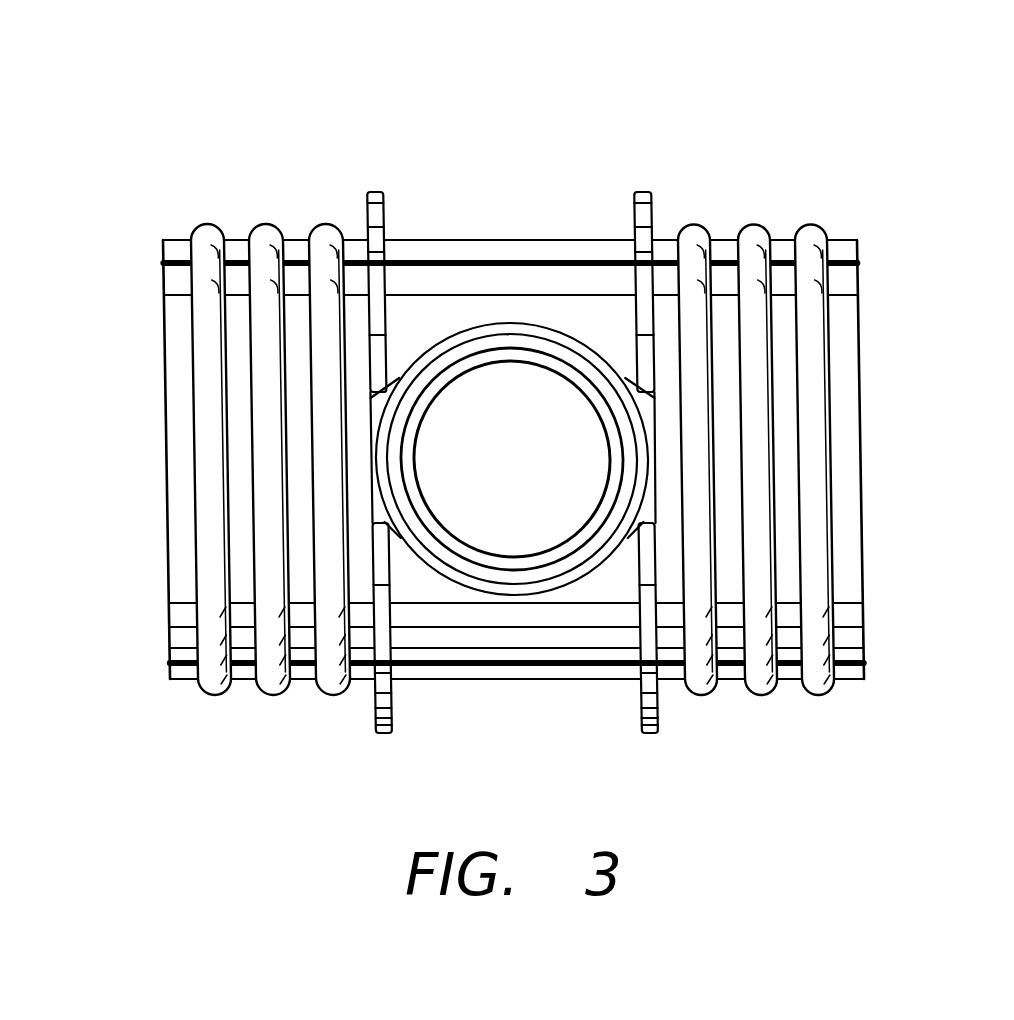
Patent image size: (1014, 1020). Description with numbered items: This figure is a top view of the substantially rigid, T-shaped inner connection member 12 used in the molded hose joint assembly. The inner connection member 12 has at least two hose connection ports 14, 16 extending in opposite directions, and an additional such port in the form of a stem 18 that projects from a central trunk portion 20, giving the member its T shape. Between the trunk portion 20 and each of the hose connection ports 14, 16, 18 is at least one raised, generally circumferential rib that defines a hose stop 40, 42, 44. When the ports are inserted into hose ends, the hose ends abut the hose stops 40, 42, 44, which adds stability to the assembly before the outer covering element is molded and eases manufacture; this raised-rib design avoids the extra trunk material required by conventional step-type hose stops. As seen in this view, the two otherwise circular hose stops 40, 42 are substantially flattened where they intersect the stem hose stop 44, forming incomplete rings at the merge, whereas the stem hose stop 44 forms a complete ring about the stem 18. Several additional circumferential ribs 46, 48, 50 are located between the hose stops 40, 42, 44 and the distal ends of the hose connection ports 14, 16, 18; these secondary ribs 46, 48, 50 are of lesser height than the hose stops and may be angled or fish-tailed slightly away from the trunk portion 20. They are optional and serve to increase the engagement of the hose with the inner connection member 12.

The inner connection member 12 is at (513, 419).
The hose connection port 14 is at (860, 275).
The hose connection port 16 is at (163, 278).
The stem 18 is at (475, 367).
The trunk portion 20 is at (487, 655).
The hose stop 40 is at (643, 190).
The hose stop 42 is at (380, 735).
The stem hose stop 44 is at (460, 330).
The circumferential rib 46 is at (205, 224).
The circumferential rib 48 is at (262, 222).
The circumferential rib 50 is at (322, 223).